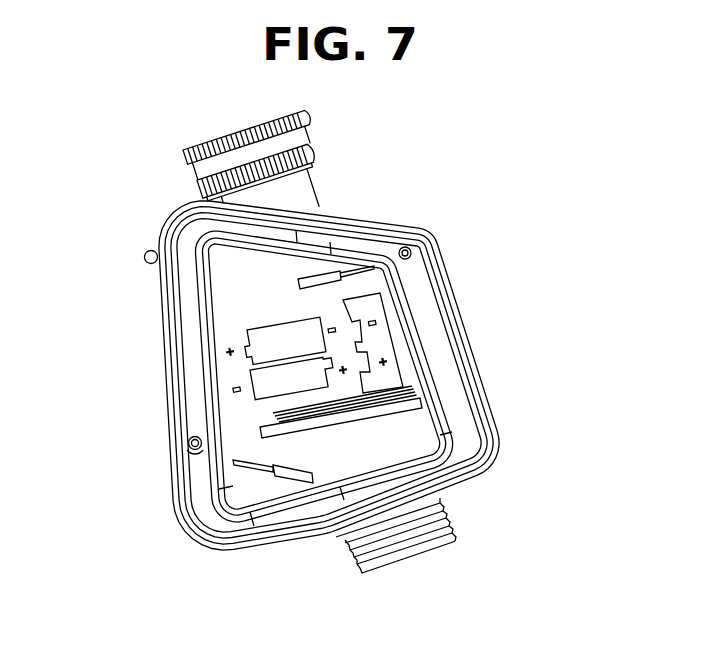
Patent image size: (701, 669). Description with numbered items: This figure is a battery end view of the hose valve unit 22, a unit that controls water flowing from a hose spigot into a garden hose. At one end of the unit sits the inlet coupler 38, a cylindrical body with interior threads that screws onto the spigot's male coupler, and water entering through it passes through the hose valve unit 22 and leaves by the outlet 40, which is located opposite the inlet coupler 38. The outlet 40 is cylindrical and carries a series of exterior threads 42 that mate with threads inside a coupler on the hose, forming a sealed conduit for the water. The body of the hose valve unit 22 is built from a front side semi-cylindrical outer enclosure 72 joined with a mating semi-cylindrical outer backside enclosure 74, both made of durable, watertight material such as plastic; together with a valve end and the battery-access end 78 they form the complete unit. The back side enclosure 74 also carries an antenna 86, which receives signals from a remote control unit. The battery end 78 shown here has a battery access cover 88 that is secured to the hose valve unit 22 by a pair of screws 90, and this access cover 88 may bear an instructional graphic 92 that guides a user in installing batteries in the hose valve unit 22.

The hose valve unit 22 is at (353, 164).
The inlet coupler 38 is at (231, 134).
The outlet 40 is at (427, 553).
The exterior threads 42 is at (452, 520).
The front side semi-cylindrical outer enclosure 72 is at (160, 332).
The semi-cylindrical outer backside enclosure 74 is at (468, 343).
The battery-access end 78 is at (405, 365).
The antenna 86 is at (152, 250).
The battery access cover 88 is at (470, 408).
The screws 90 is at (412, 253).
The instructional graphic 92 is at (307, 288).